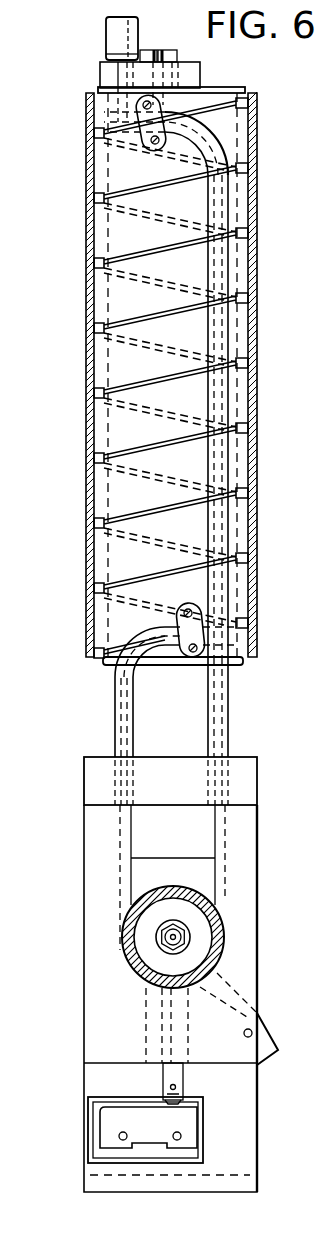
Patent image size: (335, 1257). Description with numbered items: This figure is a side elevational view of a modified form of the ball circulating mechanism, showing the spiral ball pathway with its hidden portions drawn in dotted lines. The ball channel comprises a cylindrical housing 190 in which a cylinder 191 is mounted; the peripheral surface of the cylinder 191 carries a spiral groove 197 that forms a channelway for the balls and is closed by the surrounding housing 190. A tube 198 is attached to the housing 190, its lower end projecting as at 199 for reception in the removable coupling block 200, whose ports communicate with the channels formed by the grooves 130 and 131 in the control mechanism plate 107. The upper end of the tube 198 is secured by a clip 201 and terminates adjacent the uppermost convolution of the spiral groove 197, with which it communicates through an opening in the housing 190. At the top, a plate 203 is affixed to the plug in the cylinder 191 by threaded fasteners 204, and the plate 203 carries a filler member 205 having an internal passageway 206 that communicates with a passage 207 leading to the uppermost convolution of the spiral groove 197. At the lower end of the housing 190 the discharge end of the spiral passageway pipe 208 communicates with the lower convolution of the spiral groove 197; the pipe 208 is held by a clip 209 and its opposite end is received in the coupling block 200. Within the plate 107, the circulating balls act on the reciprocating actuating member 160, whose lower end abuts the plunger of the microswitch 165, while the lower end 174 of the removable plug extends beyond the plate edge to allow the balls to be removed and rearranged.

The control mechanism plate 107 is at (100, 938).
The groove 130 is at (222, 845).
The groove 131 is at (120, 833).
The reciprocating actuating member 160 is at (180, 1070).
The microswitch 165 is at (113, 1132).
The lower end of plug 174 is at (266, 1041).
The cylindrical housing 190 is at (86, 280).
The cylinder 191 is at (106, 358).
The spiral groove 197 is at (97, 393).
The tube 198 is at (222, 283).
The lower end of tube 199 is at (228, 720).
The removable coupling block 200 is at (98, 787).
The clip 201 is at (140, 136).
The plate 203 is at (192, 68).
The threaded fasteners 204 is at (170, 50).
The filler member 205 is at (104, 45).
The internal passageway 206 is at (117, 72).
The passage 207 is at (122, 105).
The spiral passageway pipe 208 is at (128, 686).
The clip 209 is at (205, 617).